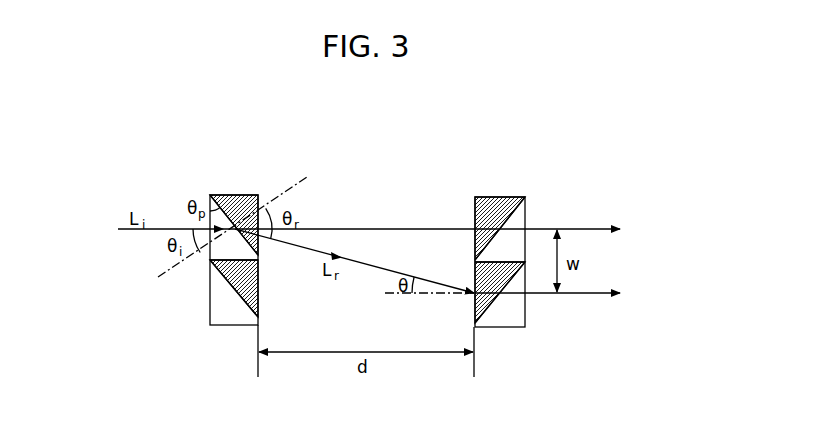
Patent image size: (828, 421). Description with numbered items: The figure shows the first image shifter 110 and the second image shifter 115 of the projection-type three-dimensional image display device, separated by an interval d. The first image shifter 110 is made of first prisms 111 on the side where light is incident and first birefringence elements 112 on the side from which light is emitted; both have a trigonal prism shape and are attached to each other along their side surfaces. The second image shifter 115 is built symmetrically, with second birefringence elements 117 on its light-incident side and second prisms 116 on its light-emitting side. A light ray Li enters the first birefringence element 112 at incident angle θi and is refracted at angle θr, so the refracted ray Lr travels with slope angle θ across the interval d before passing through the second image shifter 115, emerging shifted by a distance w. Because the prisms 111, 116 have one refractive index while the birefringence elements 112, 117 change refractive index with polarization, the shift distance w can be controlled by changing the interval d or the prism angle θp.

The first image shifter 110 is at (235, 194).
The first prisms 111 is at (228, 313).
The first birefringence elements 112 is at (230, 283).
The second image shifter 115 is at (500, 196).
The second prisms 116 is at (503, 316).
The second birefringence elements 117 is at (525, 298).